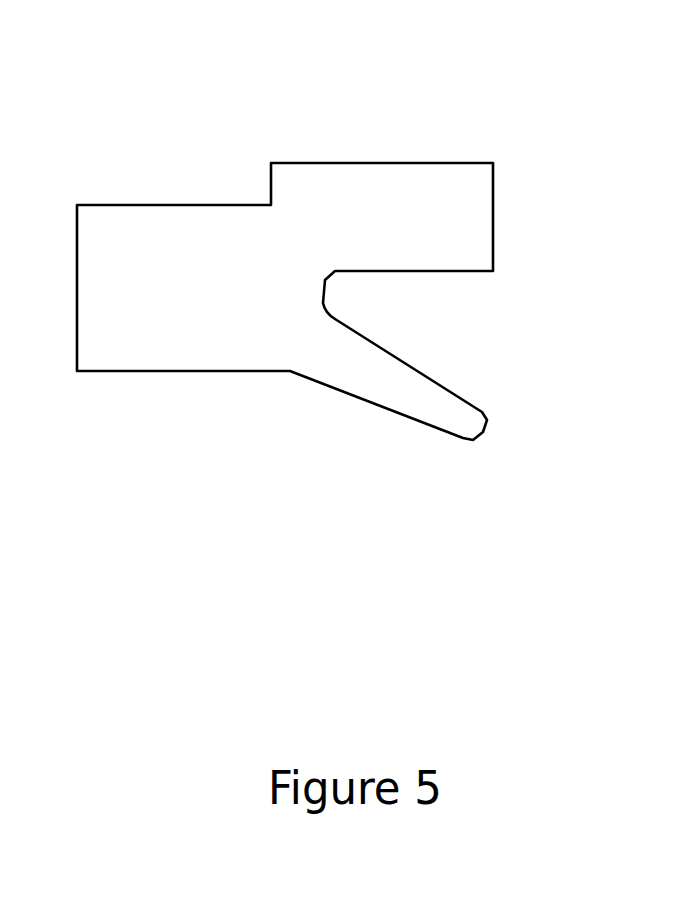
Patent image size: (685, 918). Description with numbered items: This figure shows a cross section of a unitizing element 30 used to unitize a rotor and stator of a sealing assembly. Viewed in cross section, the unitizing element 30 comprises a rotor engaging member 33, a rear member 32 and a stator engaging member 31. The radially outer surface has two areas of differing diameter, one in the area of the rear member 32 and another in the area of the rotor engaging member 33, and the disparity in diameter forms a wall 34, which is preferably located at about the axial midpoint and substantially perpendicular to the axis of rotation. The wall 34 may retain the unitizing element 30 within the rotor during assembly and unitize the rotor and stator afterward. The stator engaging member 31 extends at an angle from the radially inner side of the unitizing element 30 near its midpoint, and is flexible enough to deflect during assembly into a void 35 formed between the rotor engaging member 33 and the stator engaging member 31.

The unitizing element 30 is at (532, 157).
The stator engaging member 31 is at (390, 385).
The rear member 32 is at (128, 242).
The rotor engaging member 33 is at (397, 200).
The wall 34 is at (253, 179).
The void 35 is at (405, 314).